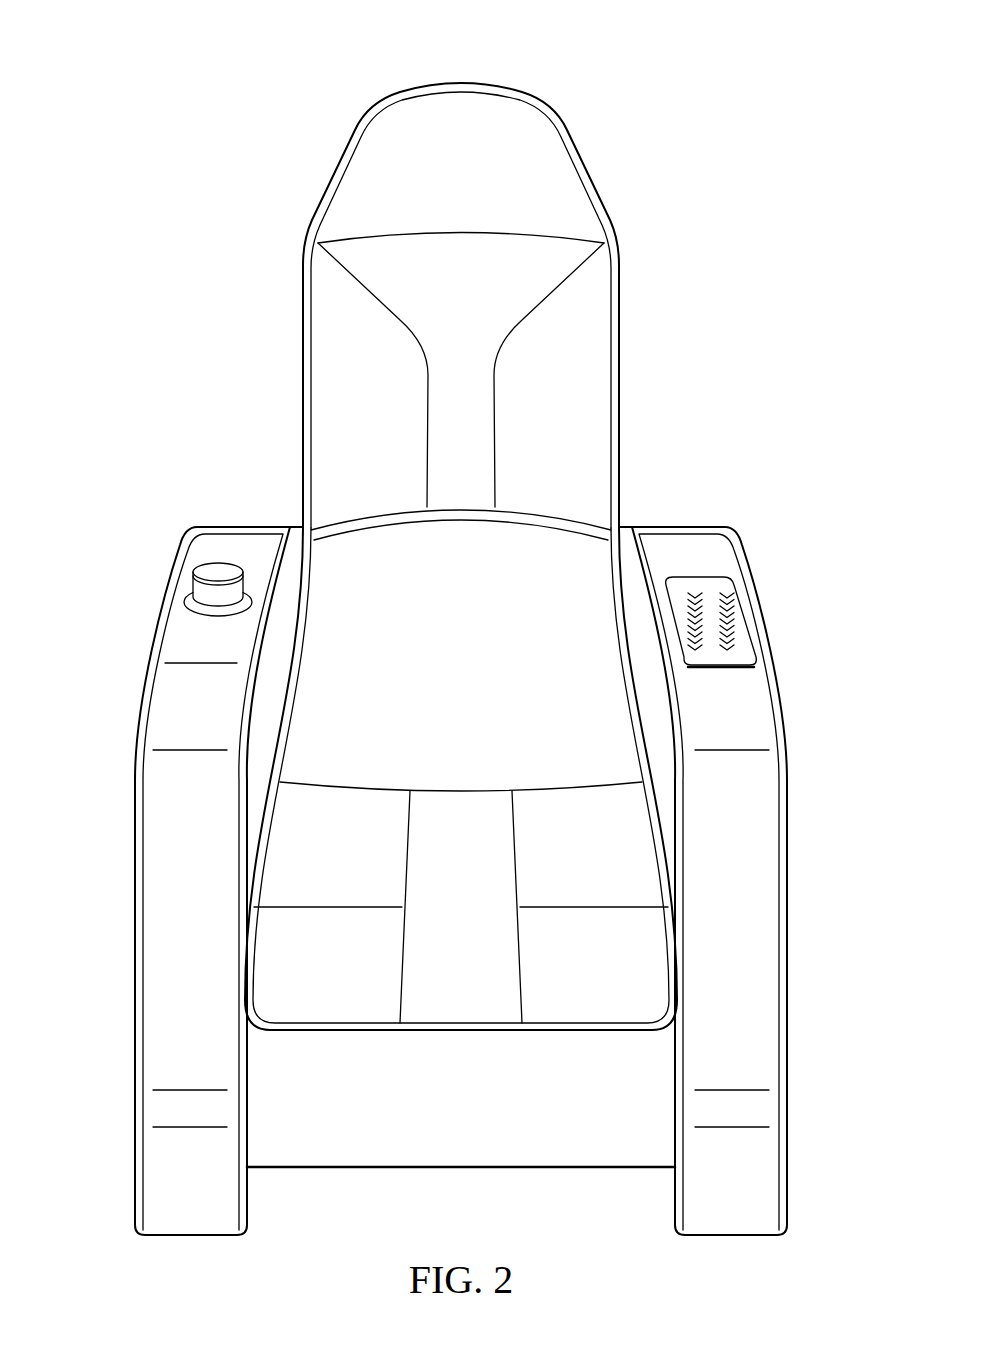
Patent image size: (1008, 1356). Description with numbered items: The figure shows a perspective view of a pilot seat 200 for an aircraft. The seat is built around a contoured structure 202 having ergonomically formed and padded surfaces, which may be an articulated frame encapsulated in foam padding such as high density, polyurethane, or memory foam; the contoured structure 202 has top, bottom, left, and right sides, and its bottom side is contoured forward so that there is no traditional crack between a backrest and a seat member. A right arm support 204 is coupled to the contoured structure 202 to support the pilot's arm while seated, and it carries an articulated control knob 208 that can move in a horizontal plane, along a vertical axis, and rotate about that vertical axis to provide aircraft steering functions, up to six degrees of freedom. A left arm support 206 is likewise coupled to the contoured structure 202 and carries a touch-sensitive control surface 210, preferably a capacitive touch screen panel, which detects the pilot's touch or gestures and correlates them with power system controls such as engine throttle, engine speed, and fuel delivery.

The pilot seat 200 is at (561, 71).
The contoured structure 202 is at (603, 337).
The right arm support 204 is at (172, 856).
The left arm support 206 is at (750, 863).
The articulated control knob 208 is at (218, 570).
The touch-sensitive control surface 210 is at (717, 583).